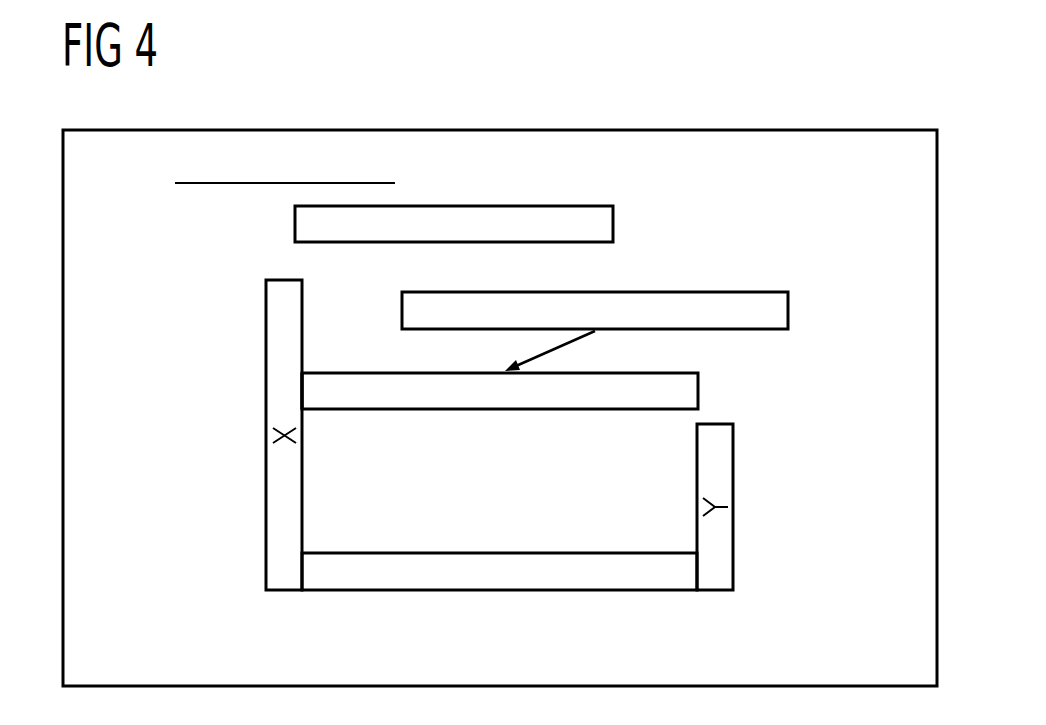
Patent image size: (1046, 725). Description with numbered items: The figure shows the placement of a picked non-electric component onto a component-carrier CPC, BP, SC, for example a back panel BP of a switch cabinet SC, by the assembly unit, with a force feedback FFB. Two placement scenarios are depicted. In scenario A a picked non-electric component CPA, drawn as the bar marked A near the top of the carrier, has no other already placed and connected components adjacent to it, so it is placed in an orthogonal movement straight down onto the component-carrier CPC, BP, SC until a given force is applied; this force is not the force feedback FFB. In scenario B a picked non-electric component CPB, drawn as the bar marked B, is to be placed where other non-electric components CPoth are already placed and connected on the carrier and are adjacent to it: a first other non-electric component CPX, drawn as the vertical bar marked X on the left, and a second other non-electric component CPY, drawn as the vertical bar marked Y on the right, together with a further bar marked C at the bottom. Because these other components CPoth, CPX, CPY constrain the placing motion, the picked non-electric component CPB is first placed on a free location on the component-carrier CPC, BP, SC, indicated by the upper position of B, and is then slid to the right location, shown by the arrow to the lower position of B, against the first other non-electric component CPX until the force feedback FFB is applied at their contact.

The component-carrier CPC is at (500, 371).
The back panel BP is at (500, 371).
The switch cabinet SC is at (498, 130).
The picked non-electric component CPA is at (386, 222).
The scenario A is at (295, 223).
The picked non-electric component CPB is at (612, 392).
The scenario B is at (788, 310).
The component C is at (500, 590).
The other non-electric components CPoth is at (499, 435).
The first other non-electric component CPX is at (195, 435).
The other component X is at (266, 478).
The second other non-electric component CPY is at (803, 507).
The other component Y is at (733, 505).
The force feedback FFB is at (309, 422).